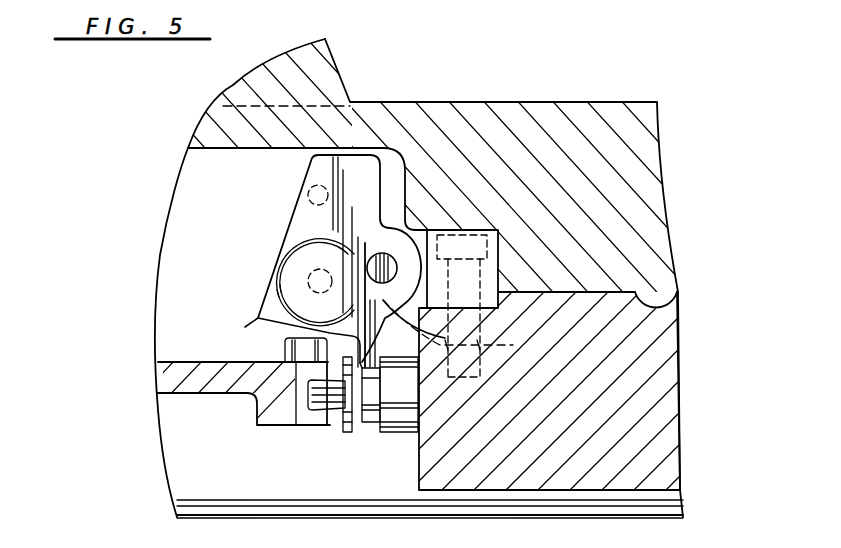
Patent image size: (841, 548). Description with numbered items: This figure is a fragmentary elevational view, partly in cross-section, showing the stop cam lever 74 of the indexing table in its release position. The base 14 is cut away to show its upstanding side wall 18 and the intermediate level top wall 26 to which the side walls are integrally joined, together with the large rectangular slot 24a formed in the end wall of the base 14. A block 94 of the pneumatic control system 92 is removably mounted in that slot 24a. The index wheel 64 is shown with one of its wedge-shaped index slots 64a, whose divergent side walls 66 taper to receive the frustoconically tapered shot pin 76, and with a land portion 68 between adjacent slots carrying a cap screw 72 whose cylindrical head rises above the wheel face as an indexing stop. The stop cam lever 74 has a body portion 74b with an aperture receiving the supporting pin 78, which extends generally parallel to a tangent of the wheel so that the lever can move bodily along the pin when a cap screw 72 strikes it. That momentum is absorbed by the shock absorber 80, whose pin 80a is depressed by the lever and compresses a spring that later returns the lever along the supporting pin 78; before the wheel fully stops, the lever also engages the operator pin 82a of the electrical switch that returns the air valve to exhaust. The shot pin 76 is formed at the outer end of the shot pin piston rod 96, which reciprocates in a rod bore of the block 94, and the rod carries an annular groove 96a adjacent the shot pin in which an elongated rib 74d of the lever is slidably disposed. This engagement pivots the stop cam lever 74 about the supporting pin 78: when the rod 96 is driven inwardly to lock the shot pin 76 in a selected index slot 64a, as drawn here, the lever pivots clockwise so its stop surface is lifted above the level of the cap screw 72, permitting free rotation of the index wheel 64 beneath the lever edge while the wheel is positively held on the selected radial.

The base 14 is at (473, 519).
The side wall 18 is at (268, 476).
The slot 24a is at (655, 312).
The top wall 26 is at (212, 136).
The index wheel 64 is at (177, 360).
The index slot 64a is at (304, 418).
The side wall 66 is at (312, 376).
The land portion 68 is at (331, 424).
The cap screw 72 is at (292, 350).
The stop cam lever 74 is at (305, 222).
The body portion 74b is at (445, 338).
The rib 74d is at (362, 366).
The shot pin 76 is at (320, 397).
The supporting pin 78 is at (390, 272).
The shock absorber 80 is at (465, 329).
The pin 80a is at (316, 286).
The operator pin 82a is at (314, 185).
The pneumatic control system 92 is at (671, 397).
The block 94 is at (548, 376).
The shot pin piston rod 96 is at (402, 433).
The annular groove 96a is at (366, 424).